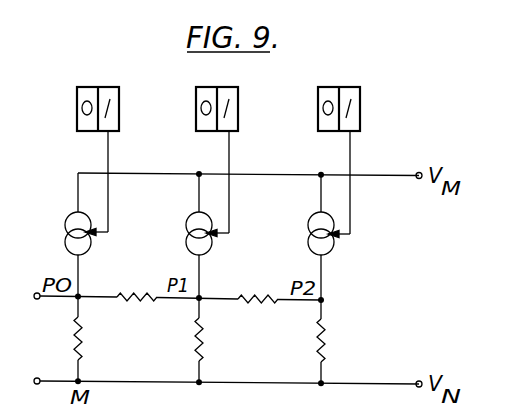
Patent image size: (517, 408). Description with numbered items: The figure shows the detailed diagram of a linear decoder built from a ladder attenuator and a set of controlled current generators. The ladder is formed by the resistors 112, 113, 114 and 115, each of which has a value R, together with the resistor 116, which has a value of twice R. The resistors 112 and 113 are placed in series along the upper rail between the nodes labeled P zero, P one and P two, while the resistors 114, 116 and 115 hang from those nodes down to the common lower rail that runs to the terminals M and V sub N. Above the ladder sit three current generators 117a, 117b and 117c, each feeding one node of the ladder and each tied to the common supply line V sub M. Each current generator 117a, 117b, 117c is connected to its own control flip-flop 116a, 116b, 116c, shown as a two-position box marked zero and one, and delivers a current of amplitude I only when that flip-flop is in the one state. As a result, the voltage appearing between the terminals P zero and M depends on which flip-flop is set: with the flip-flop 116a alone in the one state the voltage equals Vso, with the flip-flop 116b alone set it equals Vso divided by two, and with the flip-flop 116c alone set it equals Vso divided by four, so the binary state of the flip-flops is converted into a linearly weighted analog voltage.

The control flip-flop 116a is at (72, 161).
The control flip-flop 116b is at (193, 162).
The control flip-flop 116c is at (316, 162).
The current generator 117a is at (53, 233).
The current generator 117b is at (175, 233).
The current generator 117c is at (299, 233).
The resistor 112 is at (137, 316).
The resistor 113 is at (258, 317).
The resistor 114 is at (59, 338).
The resistor 115 is at (304, 340).
The resistor 116 is at (180, 339).